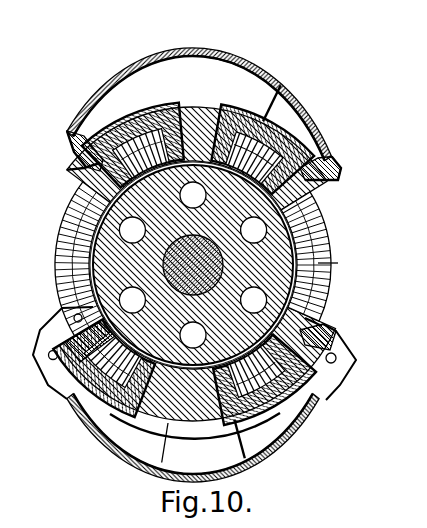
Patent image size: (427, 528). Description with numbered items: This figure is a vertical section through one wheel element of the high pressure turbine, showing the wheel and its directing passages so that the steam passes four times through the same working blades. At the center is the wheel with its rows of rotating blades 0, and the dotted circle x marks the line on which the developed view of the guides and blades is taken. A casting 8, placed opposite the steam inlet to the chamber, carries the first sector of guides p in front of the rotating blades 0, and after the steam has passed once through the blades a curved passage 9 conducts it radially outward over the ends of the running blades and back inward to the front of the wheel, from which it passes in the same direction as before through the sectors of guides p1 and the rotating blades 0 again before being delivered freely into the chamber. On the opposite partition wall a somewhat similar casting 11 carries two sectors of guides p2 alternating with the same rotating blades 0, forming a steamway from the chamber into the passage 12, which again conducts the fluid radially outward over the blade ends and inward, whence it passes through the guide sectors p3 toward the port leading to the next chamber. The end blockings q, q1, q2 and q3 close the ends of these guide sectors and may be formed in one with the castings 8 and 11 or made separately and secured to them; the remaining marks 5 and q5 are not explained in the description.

The curved passage 9 is at (205, 70).
The passage 12 is at (127, 441).
The casting 8 is at (107, 188).
The rotating blades 0 is at (75, 218).
The rotor disc 5 is at (132, 228).
The casting 11 is at (322, 325).
The dotted circle x is at (333, 264).
The end blocking q1 is at (158, 122).
The end blocking q is at (200, 90).
The end blocking q3 is at (90, 323).
The end blocking q2 is at (291, 393).
The lower field yoke q5 is at (196, 446).
The sectors of guides p1 is at (120, 167).
The first sector of guides p is at (262, 176).
The guide sectors p3 is at (110, 364).
The sectors of guides p2 is at (290, 371).